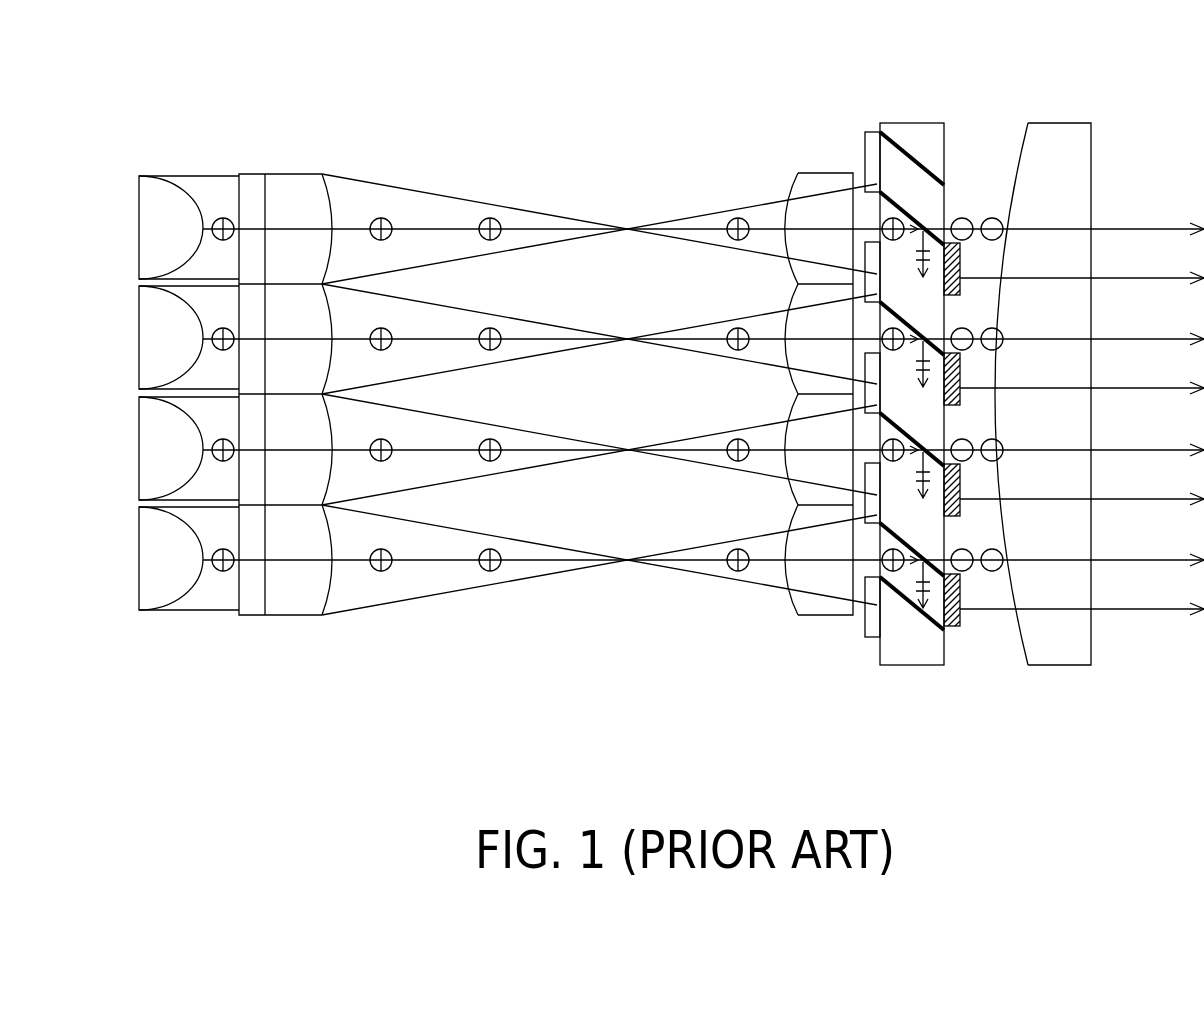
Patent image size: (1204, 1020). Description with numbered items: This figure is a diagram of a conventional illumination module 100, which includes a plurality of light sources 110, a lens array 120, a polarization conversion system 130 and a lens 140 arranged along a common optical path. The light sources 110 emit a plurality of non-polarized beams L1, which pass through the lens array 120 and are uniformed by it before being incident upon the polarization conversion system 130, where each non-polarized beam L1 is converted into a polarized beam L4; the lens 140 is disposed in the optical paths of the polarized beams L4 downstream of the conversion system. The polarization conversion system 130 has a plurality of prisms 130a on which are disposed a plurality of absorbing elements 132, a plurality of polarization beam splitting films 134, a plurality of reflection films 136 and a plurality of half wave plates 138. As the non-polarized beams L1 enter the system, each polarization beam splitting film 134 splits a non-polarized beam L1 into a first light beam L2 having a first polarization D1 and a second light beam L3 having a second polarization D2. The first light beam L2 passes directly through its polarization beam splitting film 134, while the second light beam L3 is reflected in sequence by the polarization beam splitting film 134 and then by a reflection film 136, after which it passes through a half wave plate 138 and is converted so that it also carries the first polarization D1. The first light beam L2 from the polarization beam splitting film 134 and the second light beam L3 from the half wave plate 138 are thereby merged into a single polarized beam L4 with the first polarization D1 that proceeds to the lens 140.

The illumination module 100 is at (1197, 693).
The light sources 110 is at (166, 203).
The lens array 120 is at (282, 657).
The polarization conversion system 130 is at (900, 705).
The prisms 130a is at (898, 163).
The absorbing elements 132 is at (865, 138).
The polarization beam splitting films 134 is at (925, 238).
The reflection films 136 is at (960, 313).
The half wave plates 138 is at (957, 603).
The lens 140 is at (1057, 648).
The non-polarized beams L1 is at (616, 172).
The first light beam L2 is at (950, 208).
The second light beam L3 is at (922, 253).
The polarized beam L4 is at (1002, 642).
The first polarization D1 is at (1003, 220).
The second polarization D2 is at (958, 262).